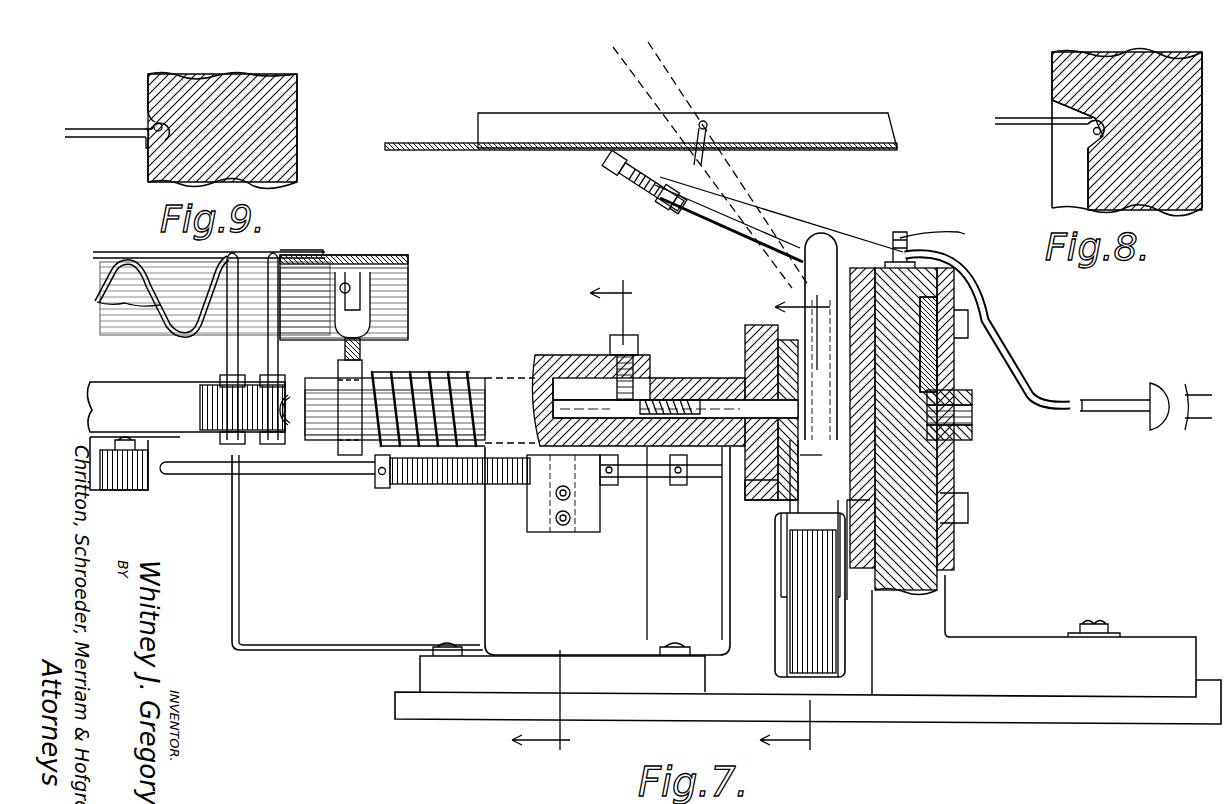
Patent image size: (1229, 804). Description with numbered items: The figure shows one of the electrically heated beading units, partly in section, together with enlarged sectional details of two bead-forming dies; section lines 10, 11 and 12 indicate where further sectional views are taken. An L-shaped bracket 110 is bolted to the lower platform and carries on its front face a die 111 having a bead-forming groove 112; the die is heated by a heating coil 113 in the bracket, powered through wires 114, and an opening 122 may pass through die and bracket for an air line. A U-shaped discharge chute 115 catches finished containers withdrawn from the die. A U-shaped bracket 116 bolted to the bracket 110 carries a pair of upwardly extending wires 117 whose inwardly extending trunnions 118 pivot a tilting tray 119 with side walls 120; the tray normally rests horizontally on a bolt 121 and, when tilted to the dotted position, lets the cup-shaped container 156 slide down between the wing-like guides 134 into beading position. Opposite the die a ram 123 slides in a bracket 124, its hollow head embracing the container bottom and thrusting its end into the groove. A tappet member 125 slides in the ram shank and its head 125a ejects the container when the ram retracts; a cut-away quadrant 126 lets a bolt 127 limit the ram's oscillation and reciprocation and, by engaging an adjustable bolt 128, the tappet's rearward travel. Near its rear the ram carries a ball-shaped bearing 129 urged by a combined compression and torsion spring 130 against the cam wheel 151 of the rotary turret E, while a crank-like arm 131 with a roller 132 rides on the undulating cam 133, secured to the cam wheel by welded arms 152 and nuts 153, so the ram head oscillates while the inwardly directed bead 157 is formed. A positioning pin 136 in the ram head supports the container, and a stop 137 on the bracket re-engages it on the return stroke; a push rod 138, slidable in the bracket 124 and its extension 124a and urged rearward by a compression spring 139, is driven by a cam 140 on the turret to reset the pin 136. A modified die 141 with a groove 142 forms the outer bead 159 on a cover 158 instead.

In FIG. 7, the section line 10— 10 is at (801, 519).
In FIG. 7, the section line 11— 11 is at (574, 516).
In FIG. 7, the section line 12— 12 is at (1045, 712).
In FIG. 7, the L-shaped bracket 110 is at (1045, 635).
In FIG. 8, the die 111 is at (1185, 213).
In FIG. 7, the die 111 is at (862, 265).
In FIG. 8, the bead-forming groove 112 is at (1090, 147).
In FIG. 7, the bead-forming groove 112 is at (868, 482).
In FIG. 7, the heating coil 113 is at (948, 470).
In FIG. 7, the wires 114 is at (1035, 398).
In FIG. 7, the U-shaped discharge chute 115 is at (795, 635).
In FIG. 7, the U-shaped bracket 116 is at (768, 220).
In FIG. 7, the upwardly extending wires 117 is at (690, 162).
In FIG. 7, the trunnions 118 is at (706, 125).
In FIG. 7, the tilting tray 119 is at (530, 145).
In FIG. 7, the side walls 120 is at (596, 128).
In FIG. 7, the bolt 121 is at (625, 180).
In FIG. 7, the opening 122 is at (962, 420).
In FIG. 7, the ram 123 is at (658, 382).
In FIG. 7, the bracket 124 is at (630, 561).
In FIG. 7, the bracket extension 124a is at (240, 548).
In FIG. 7, the tappet member 125 is at (722, 402).
In FIG. 7, the tappet head 125a is at (752, 335).
In FIG. 7, the cut-away quadrant 126 is at (570, 390).
In FIG. 7, the bolt 127 is at (627, 337).
In FIG. 7, the adjustable bolt 128 is at (655, 397).
In FIG. 7, the ball-shaped bearing 129 is at (300, 378).
In FIG. 7, the combined compression and torsion spring 130 is at (420, 375).
In FIG. 7, the crank-like arm 131 is at (360, 352).
In FIG. 7, the roller 132 is at (355, 272).
In FIG. 7, the cam 133 is at (400, 268).
In FIG. 7, the wing-like guides 134 is at (815, 258).
In FIG. 7, the positioning pin 136 is at (795, 502).
In FIG. 7, the stop 137 is at (720, 480).
In FIG. 7, the push rod 138 is at (305, 478).
In FIG. 7, the compression spring 139 is at (452, 487).
In FIG. 7, the cam 140 is at (150, 475).
In FIG. 9, the modified die 141 is at (270, 147).
In FIG. 9, the groove 142 is at (146, 140).
In FIG. 7, the cam wheel 151 is at (180, 376).
In FIG. 7, the welded arms 152 is at (222, 347).
In FIG. 7, the nuts 153 is at (220, 440).
In FIG. 8, the cup-shaped container 156 is at (1020, 117).
In FIG. 7, the cup-shaped container 156 is at (817, 454).
In FIG. 8, the inwardly directed bead 157 is at (1092, 130).
In FIG. 9, the cover 158 is at (108, 135).
In FIG. 9, the outer bead 159 is at (150, 120).
In FIG. 7, the rotary turret E is at (97, 380).